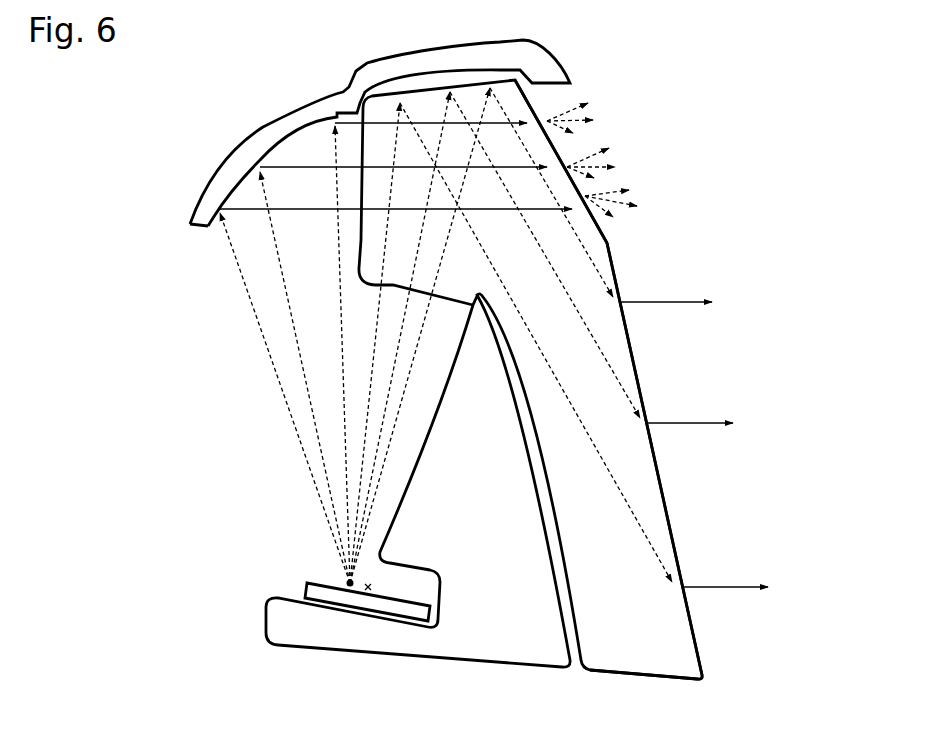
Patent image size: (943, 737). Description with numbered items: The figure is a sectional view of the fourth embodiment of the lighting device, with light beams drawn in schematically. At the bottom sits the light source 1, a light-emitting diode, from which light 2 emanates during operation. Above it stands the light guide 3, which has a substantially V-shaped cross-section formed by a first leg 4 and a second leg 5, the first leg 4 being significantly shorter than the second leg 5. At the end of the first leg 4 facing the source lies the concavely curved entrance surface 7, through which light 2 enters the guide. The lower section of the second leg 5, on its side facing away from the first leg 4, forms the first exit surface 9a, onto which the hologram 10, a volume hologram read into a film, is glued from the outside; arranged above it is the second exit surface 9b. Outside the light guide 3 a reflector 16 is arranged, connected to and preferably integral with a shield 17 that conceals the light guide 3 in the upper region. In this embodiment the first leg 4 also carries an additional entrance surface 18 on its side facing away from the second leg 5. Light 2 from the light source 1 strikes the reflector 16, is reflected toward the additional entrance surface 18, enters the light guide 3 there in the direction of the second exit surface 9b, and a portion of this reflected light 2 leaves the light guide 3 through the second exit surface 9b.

The light source 1 is at (350, 583).
The light 2 is at (595, 163).
The light guide 3 is at (704, 377).
The first leg 4 is at (358, 242).
The second leg 5 is at (698, 650).
The entrance surface 7 is at (393, 285).
The first exit surface 9a is at (743, 459).
The second exit surface 9b is at (577, 190).
The hologram 10 is at (666, 508).
The reflector 16 is at (237, 182).
The shield 17 is at (553, 53).
The additional entrance surface 18 is at (356, 270).